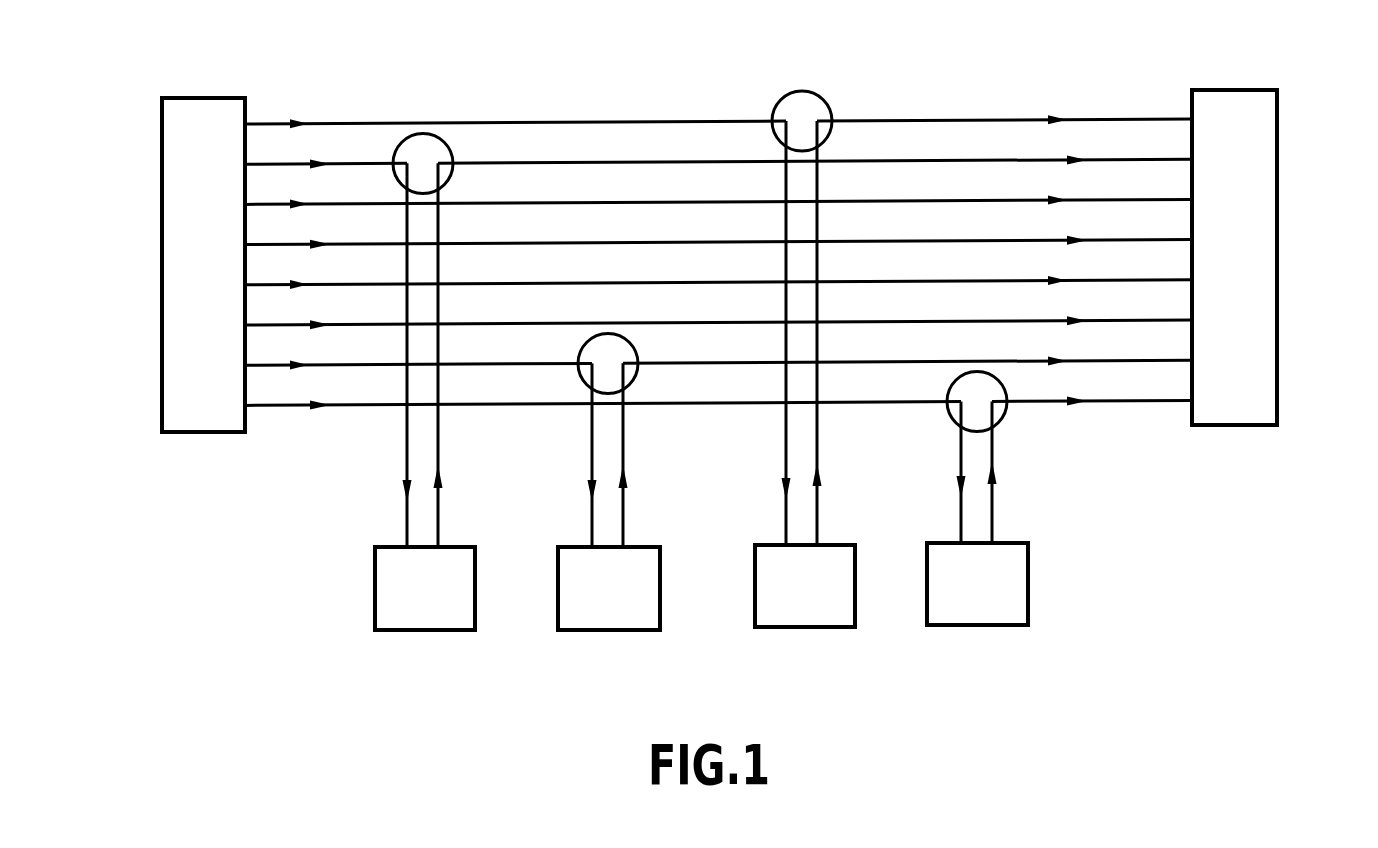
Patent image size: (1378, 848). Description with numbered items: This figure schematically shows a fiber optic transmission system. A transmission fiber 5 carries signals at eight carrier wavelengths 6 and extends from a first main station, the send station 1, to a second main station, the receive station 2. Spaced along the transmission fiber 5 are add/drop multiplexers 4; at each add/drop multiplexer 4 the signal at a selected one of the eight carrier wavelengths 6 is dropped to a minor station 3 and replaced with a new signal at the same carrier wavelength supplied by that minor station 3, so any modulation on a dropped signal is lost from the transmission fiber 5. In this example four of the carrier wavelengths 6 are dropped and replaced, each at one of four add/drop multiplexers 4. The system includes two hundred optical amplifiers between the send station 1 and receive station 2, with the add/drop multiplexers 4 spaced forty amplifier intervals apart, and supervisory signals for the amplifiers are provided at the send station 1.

The send station 1 is at (156, 166).
The receive station 2 is at (1288, 152).
The minor station 3 is at (1030, 582).
The add/drop multiplexer 4 is at (820, 96).
The transmission fiber 5 is at (718, 214).
The carrier wavelengths 6 is at (503, 203).